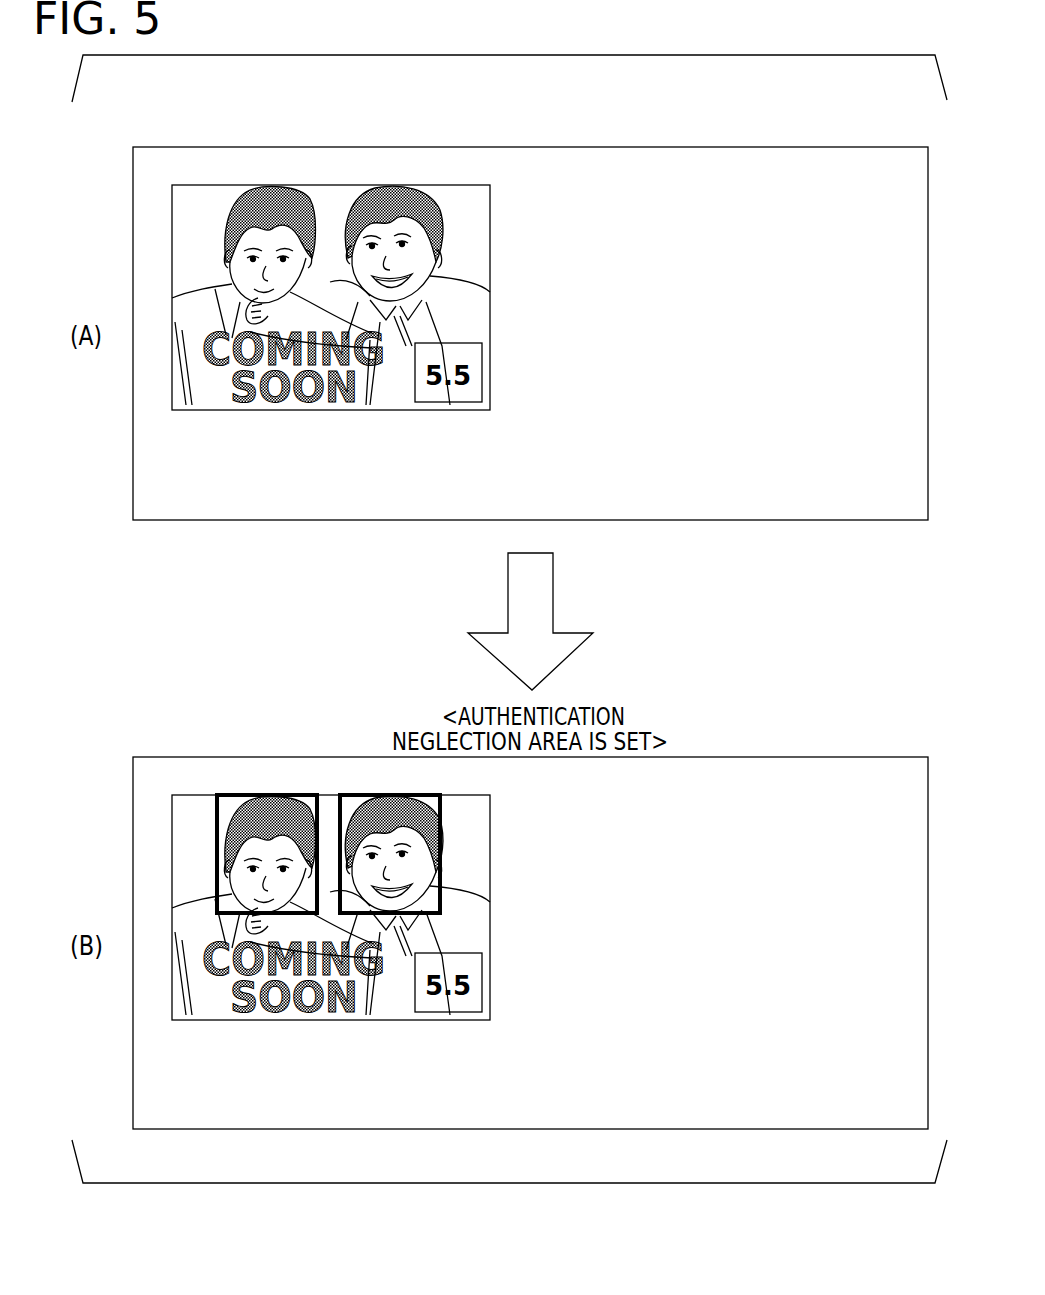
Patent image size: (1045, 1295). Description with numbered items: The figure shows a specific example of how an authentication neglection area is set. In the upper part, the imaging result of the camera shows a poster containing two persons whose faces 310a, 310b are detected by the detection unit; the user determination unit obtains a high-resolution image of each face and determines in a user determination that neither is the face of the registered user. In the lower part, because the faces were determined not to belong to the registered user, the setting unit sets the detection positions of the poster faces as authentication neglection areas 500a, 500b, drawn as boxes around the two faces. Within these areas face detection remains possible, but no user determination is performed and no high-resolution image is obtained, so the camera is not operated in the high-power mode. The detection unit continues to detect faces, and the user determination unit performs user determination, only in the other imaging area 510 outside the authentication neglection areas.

The face 310a is at (387, 186).
The face 310b is at (267, 186).
The authentication neglection area 500a is at (384, 802).
The authentication neglection area 500b is at (263, 802).
The imaging area other than the authentication neglection area 510 is at (782, 748).